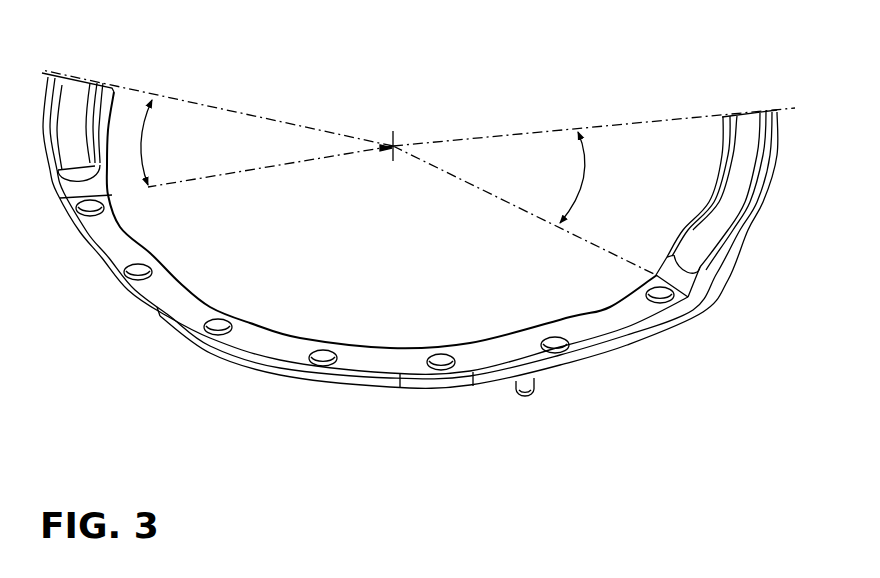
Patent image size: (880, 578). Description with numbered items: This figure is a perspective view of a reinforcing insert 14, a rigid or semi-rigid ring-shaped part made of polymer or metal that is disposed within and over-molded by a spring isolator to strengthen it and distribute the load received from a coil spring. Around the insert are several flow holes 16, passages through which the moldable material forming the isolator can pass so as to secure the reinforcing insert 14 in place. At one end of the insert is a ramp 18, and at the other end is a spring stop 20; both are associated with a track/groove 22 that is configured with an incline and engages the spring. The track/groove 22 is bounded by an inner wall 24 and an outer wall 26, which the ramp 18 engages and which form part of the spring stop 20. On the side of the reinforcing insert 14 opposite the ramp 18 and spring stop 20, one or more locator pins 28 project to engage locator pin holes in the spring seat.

The reinforcing insert 14 is at (320, 103).
The flow holes 16 is at (440, 356).
The ramp 18 is at (748, 110).
The spring stop 20 is at (78, 78).
The track/groove 22 is at (717, 226).
The inner wall 24 is at (757, 207).
The outer wall 26 is at (718, 181).
The locator pins 28 is at (527, 399).